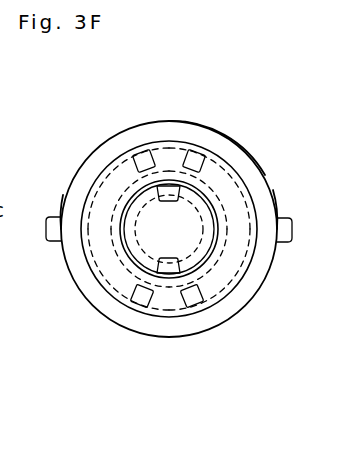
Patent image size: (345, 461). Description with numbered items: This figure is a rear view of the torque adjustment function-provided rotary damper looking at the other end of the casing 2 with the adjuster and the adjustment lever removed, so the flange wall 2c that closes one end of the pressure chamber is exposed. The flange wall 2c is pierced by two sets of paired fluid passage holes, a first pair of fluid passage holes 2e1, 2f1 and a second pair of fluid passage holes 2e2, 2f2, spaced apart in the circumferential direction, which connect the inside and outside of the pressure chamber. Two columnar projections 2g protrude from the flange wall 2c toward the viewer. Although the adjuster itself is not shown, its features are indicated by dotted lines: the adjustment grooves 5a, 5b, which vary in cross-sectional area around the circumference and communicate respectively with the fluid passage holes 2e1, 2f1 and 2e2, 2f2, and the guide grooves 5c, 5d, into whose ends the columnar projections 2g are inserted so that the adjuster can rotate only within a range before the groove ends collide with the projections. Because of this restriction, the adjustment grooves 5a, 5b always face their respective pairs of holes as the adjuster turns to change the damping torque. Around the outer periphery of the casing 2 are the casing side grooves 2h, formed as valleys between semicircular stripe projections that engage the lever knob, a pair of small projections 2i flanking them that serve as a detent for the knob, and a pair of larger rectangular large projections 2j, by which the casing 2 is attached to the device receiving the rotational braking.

The casing 2 is at (169, 168).
The flange wall 2c is at (85, 218).
The fluid passage hole 2e1 is at (139, 152).
The fluid passage hole 2e2 is at (200, 307).
The fluid passage hole 2f1 is at (198, 150).
The fluid passage hole 2f2 is at (140, 308).
The columnar projection 2g is at (168, 186).
The casing side groove 2h is at (238, 142).
The small projection 2i is at (274, 186).
The large projection 2j is at (47, 243).
The adjustment groove 5a is at (84, 153).
The adjustment groove 5b is at (82, 300).
The guide groove 5c is at (245, 170).
The guide groove 5d is at (252, 310).